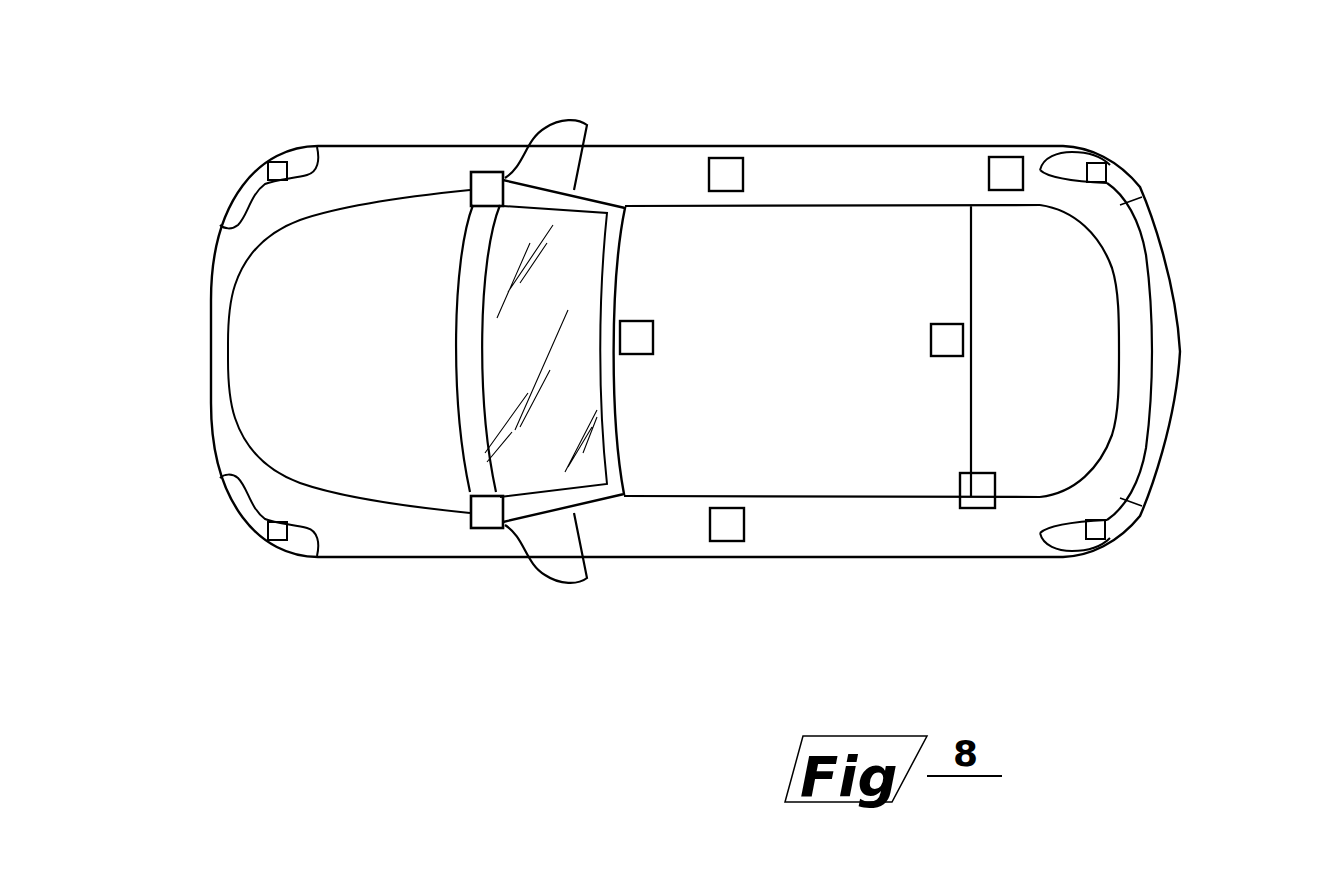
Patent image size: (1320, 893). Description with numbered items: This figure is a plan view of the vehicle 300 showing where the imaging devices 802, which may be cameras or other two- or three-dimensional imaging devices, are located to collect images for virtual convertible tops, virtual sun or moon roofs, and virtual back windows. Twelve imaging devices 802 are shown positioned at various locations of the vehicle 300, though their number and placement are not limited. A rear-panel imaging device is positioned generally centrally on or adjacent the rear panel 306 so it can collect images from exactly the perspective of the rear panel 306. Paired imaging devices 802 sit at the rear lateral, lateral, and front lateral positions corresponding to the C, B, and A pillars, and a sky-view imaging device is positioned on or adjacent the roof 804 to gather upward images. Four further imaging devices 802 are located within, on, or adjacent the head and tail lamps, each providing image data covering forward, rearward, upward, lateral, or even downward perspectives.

The vehicle 300 is at (688, 408).
The rear panel 306 is at (1090, 293).
The imaging devices 802 is at (236, 68).
The roof 804 is at (826, 285).